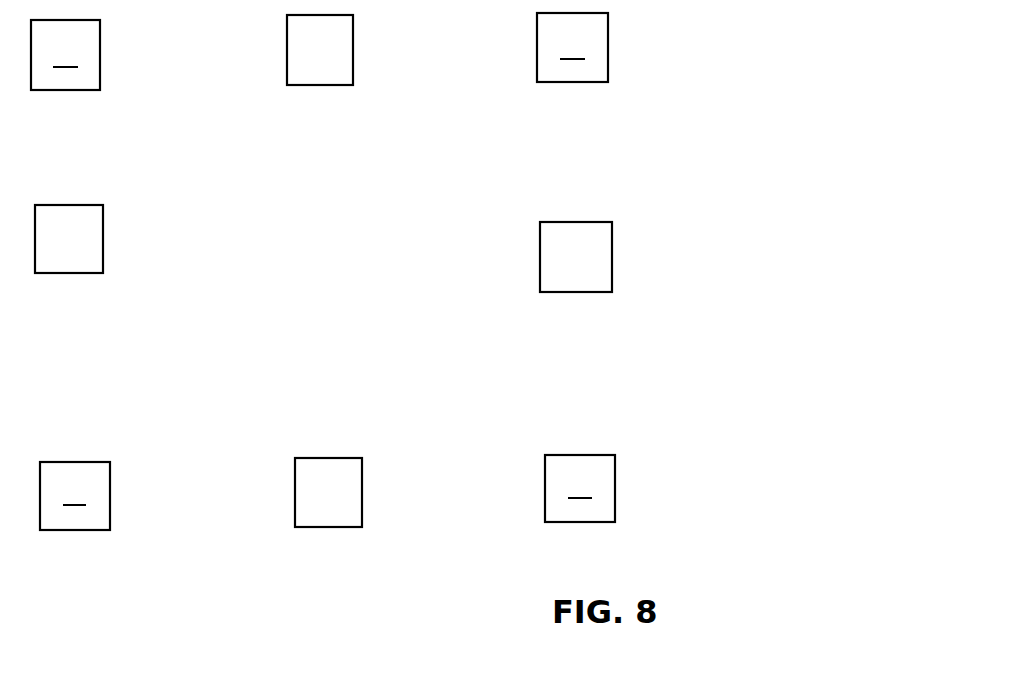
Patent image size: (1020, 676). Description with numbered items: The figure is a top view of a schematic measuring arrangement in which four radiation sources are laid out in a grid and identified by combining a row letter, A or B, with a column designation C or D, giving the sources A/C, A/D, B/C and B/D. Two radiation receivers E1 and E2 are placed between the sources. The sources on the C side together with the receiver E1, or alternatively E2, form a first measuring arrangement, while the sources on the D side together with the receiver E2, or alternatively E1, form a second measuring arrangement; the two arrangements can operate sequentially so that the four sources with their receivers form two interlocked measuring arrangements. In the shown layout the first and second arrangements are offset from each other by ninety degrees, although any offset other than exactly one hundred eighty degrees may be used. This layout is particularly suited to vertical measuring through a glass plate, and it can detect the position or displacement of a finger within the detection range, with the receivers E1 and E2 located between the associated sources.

The radiation source column designation C is at (80, 50).
The radiation source column designation D is at (588, 60).
The radiation receiver E1 is at (87, 239).
The radiation receiver E2 is at (327, 47).